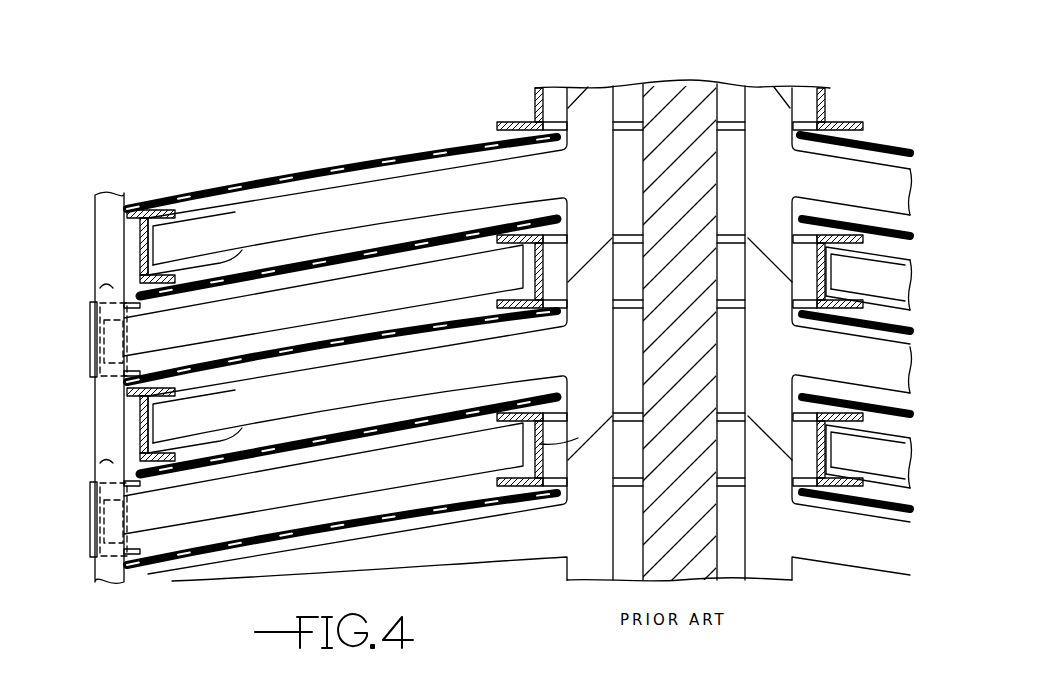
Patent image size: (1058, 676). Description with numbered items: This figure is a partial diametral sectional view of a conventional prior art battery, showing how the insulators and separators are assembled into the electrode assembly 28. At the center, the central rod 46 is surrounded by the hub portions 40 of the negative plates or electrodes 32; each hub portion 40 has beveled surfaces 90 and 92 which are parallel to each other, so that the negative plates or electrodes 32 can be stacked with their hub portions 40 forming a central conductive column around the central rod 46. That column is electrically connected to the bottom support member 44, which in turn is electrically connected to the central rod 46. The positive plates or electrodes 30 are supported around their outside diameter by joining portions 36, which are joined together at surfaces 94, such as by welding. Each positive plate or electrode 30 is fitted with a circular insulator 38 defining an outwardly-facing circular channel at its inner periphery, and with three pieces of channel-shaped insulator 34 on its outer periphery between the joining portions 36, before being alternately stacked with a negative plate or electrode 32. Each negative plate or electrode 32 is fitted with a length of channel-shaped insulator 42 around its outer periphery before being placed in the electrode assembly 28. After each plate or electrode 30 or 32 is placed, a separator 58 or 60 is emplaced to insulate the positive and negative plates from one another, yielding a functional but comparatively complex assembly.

The electrode assembly 28 is at (258, 140).
The positive plate or electrode 30 is at (135, 344).
The negative plate or electrode 32 is at (318, 205).
The channel-shaped insulator 34 is at (90, 334).
The joining portion 36 is at (108, 224).
The circular insulator 38 is at (512, 124).
The hub portion 40 is at (585, 173).
The channel-shaped insulator 42 is at (140, 237).
The bottom support member 44 is at (140, 414).
The central rod 46 is at (672, 110).
The separator 58 is at (387, 250).
The separator 60 is at (400, 147).
The beveled surface 90 is at (575, 272).
The beveled surface 92 is at (540, 447).
The joining surface 94 is at (107, 286).